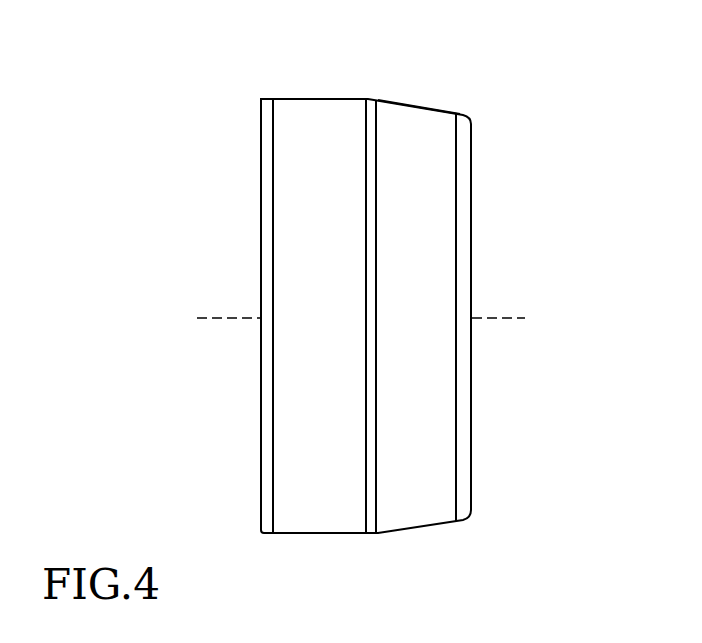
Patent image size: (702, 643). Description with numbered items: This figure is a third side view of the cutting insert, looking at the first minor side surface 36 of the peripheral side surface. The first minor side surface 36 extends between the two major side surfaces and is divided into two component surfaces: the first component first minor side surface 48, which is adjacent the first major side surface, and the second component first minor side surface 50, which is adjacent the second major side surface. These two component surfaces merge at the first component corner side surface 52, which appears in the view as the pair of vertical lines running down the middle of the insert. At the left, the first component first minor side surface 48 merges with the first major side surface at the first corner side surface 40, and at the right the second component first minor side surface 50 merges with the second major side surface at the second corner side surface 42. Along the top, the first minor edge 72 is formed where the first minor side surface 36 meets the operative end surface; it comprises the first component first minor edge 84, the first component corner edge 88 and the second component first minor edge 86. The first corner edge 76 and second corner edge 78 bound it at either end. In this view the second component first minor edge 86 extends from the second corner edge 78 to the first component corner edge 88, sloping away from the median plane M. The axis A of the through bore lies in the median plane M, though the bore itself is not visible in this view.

The first minor edge 72 is at (341, 99).
The first corner edge 76 is at (262, 98).
The first component first minor edge 84 is at (299, 98).
The first component corner edge 88 is at (370, 99).
The second component first minor edge 86 is at (415, 107).
The second corner edge 78 is at (464, 111).
The first corner side surface 40 is at (270, 193).
The second corner side surface 42 is at (462, 215).
The first component first minor side surface 48 is at (334, 258).
The second component first minor side surface 50 is at (430, 256).
The first component corner side surface 52 is at (372, 277).
The first minor side surface 36 is at (326, 402).
The axis A is at (232, 319).
The median plane M is at (497, 320).